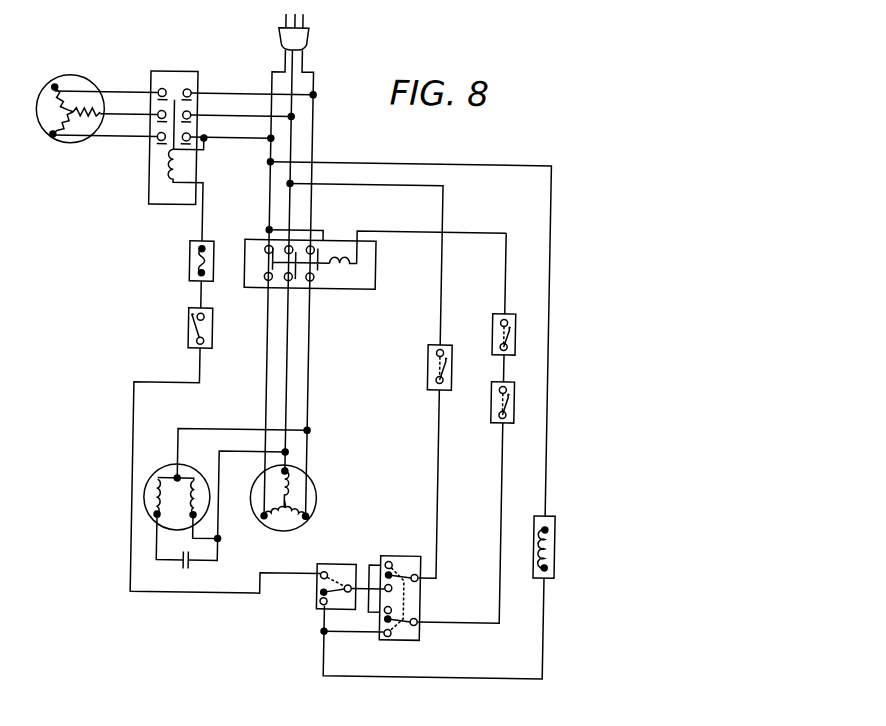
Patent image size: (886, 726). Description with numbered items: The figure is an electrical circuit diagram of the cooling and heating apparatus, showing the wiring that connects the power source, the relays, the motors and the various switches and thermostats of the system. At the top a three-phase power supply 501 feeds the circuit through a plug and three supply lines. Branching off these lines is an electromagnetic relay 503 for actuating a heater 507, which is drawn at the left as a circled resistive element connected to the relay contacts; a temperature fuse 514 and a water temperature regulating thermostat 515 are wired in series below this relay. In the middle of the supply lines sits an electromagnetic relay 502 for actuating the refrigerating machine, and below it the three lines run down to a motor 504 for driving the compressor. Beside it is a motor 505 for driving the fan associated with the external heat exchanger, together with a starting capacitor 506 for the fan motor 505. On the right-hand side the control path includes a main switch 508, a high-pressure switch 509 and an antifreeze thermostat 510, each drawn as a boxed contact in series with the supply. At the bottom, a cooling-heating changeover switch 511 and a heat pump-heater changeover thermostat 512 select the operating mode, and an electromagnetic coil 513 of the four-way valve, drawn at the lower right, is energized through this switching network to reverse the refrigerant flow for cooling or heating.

The three-phase power supply 501 is at (306, 35).
The electromagnetic relay 502 is at (348, 290).
The electromagnetic relay 503 is at (182, 73).
The motor 504 is at (323, 503).
The motor 505 is at (154, 482).
The starting capacitor 506 is at (198, 568).
The heater 507 is at (67, 147).
The main switch 508 is at (438, 388).
The high-pressure switch 509 is at (523, 335).
The antifreeze thermostat 510 is at (525, 405).
The cooling-heating changeover switch 511 is at (417, 640).
The heat pump-heater changeover thermostat 512 is at (325, 610).
The electromagnetic coil 513 is at (563, 565).
The temperature fuse 514 is at (192, 252).
The water temperature regulating thermostat 515 is at (191, 337).